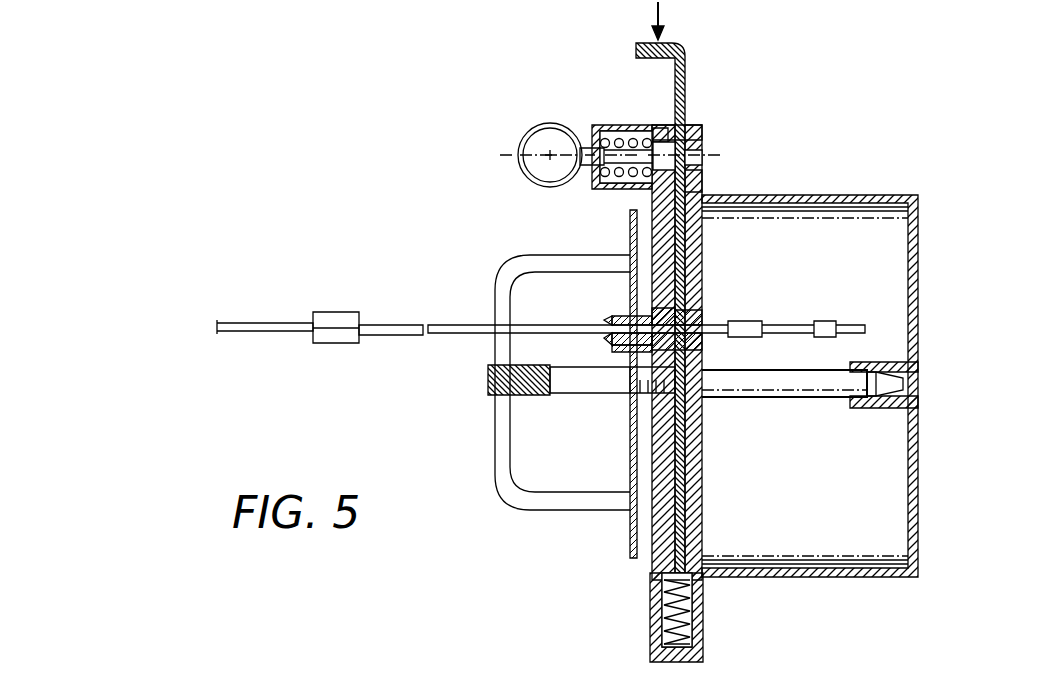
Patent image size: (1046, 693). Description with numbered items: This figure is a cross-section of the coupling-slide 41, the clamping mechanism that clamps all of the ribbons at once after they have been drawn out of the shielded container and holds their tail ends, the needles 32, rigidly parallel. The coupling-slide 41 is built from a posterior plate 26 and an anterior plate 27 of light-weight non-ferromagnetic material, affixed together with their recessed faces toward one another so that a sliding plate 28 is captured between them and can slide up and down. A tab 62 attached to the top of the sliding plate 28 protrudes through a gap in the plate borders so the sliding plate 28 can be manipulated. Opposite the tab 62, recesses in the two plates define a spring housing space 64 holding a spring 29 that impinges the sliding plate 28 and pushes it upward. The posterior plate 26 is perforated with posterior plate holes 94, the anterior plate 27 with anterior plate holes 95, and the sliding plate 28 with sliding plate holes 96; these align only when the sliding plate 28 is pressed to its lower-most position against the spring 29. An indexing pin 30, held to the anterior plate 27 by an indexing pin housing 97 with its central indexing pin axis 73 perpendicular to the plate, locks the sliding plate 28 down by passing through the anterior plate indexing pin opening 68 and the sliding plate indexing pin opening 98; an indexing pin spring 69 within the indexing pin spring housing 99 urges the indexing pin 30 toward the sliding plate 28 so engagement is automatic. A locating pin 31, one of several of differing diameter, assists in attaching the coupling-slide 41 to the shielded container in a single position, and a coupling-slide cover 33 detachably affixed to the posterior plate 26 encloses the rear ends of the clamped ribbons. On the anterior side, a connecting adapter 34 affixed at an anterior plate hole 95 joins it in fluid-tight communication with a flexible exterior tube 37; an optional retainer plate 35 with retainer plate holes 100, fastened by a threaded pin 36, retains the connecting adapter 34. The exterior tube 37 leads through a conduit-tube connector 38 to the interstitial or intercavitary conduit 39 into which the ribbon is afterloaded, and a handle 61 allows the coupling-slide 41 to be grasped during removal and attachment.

The posterior plate 26 is at (700, 180).
The anterior plate 27 is at (662, 232).
The sliding plate 28 is at (680, 448).
The spring 29 is at (704, 622).
The indexing pin 30 is at (700, 160).
The locating pin 31 is at (822, 398).
The needle 32 is at (829, 322).
The coupling-slide cover 33 is at (918, 217).
The connecting adapter 34 is at (614, 318).
The retainer plate 35 is at (630, 448).
The threaded pin 36 is at (583, 386).
The exterior tube 37 is at (399, 322).
The conduit-tube connector 38 is at (338, 318).
The interstitial or intercavitary conduit 39 is at (261, 334).
The coupling-slide 41 is at (594, 546).
The handle 61 is at (495, 448).
The tab 62 is at (686, 56).
The spring housing space 64 is at (664, 612).
The anterior plate indexing pin opening 68 is at (660, 130).
The indexing pin spring 69 is at (616, 138).
The central indexing pin axis 73 is at (530, 155).
The posterior plate hole 94 is at (702, 345).
The anterior plate hole 95 is at (660, 318).
The sliding plate hole 96 is at (702, 318).
The indexing pin housing 97 is at (593, 125).
The sliding plate indexing pin opening 98 is at (703, 133).
The indexing pin spring housing 99 is at (622, 188).
The retainer plate hole 100 is at (614, 346).